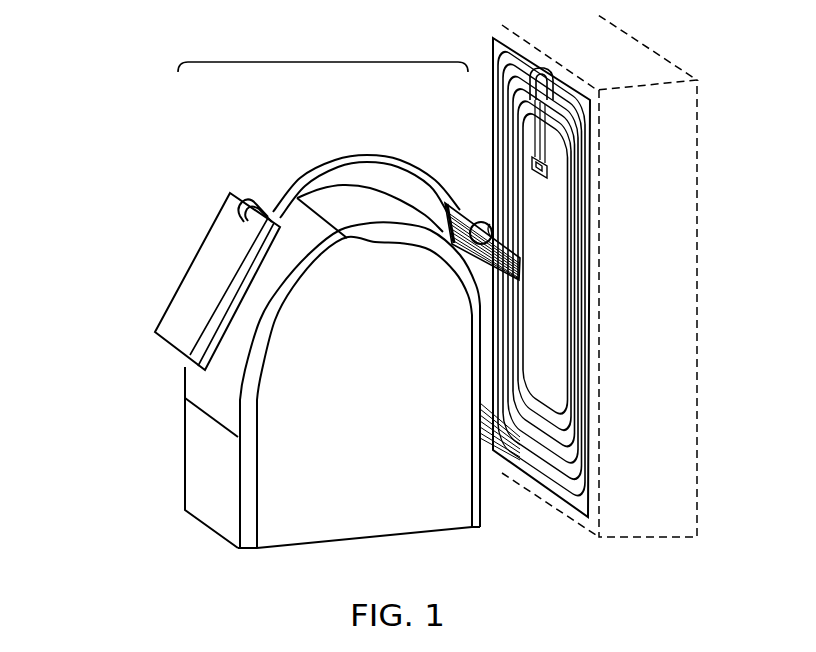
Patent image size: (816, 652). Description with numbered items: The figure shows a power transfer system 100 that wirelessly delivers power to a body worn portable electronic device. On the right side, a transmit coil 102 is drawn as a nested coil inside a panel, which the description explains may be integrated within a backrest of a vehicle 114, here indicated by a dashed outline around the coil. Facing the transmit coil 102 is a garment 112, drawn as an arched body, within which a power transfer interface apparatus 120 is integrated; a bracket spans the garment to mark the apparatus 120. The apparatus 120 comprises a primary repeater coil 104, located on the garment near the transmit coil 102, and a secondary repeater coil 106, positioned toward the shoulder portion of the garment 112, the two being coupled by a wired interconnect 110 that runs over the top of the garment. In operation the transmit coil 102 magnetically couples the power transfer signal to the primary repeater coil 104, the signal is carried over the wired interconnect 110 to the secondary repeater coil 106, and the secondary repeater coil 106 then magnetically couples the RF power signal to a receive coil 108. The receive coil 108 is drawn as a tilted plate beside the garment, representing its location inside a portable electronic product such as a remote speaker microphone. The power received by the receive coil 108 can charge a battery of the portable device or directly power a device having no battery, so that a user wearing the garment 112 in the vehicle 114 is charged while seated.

The power transfer system 100 is at (170, 593).
The transmit (TX) coil 102 is at (592, 246).
The primary repeater coil 104 is at (485, 457).
The secondary repeater coil 106 is at (188, 362).
The receive (RX) coil 108 is at (197, 257).
The wired interconnect 110 is at (346, 156).
The garment 112 is at (191, 492).
The vehicle 114 is at (688, 146).
The power transfer interface apparatus 120 is at (323, 51).